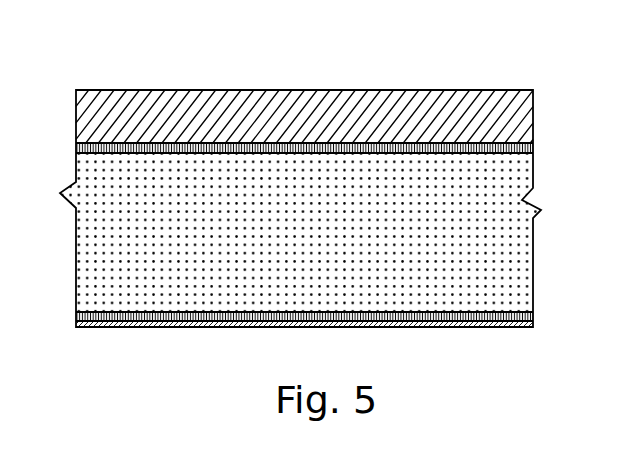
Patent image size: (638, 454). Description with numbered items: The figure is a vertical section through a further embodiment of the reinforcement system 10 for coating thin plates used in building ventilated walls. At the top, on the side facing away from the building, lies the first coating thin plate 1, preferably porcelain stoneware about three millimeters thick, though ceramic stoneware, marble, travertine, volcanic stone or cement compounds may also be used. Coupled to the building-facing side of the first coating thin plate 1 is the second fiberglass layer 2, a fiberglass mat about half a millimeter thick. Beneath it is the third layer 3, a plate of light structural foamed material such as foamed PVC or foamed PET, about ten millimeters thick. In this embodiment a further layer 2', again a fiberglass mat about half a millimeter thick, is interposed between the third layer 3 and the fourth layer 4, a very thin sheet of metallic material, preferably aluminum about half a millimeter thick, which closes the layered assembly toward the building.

The reinforcement system 10 is at (113, 43).
The first coating thin plate 1 is at (522, 117).
The second fiberglass layer 2 is at (331, 160).
The third layer of light structural foamed material 3 is at (515, 250).
The further fiberglass mat layer 2' is at (331, 332).
The fourth layer 4 is at (518, 327).